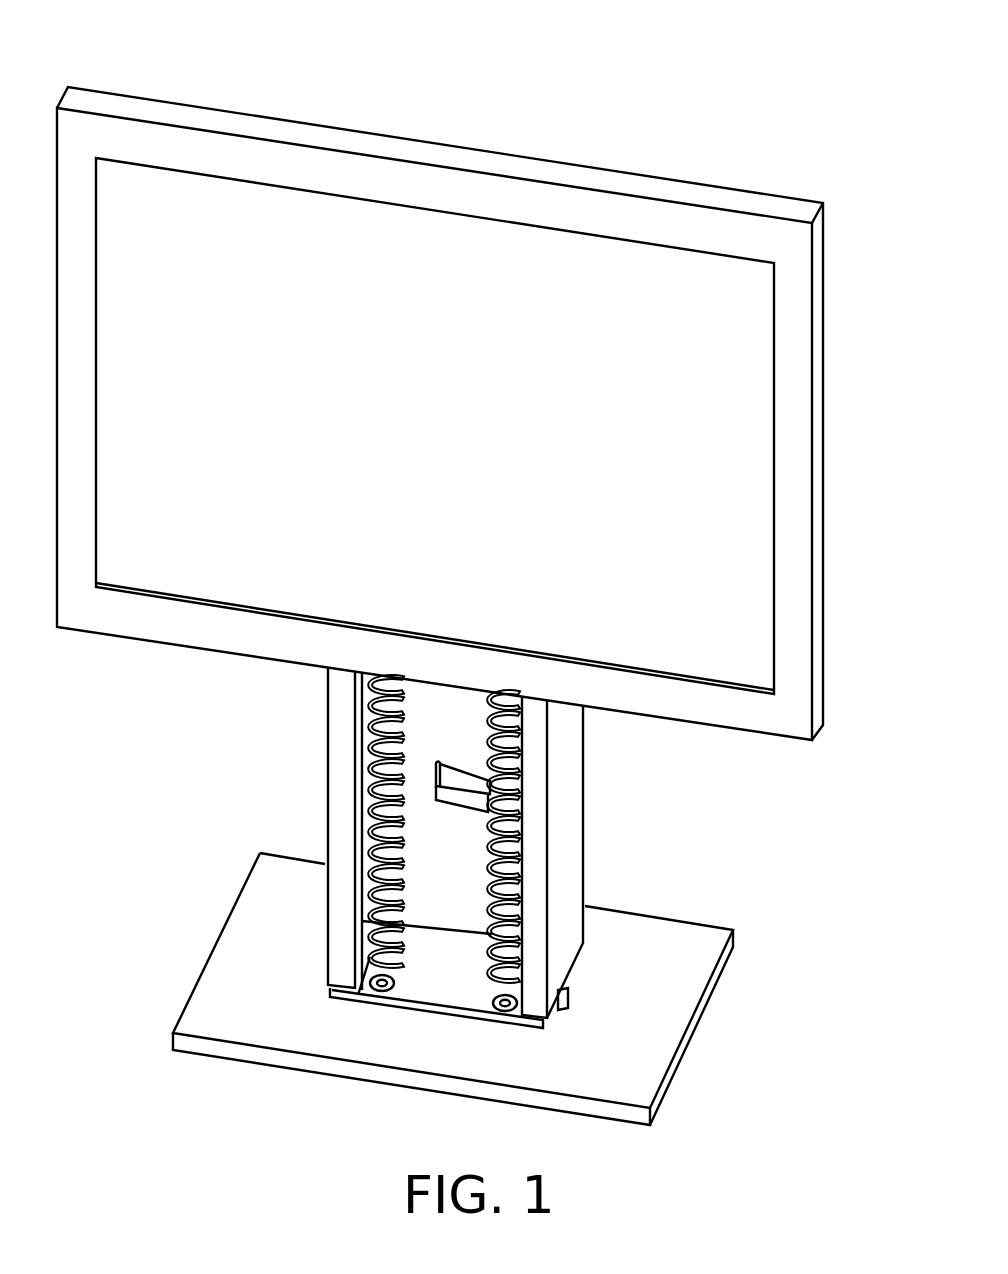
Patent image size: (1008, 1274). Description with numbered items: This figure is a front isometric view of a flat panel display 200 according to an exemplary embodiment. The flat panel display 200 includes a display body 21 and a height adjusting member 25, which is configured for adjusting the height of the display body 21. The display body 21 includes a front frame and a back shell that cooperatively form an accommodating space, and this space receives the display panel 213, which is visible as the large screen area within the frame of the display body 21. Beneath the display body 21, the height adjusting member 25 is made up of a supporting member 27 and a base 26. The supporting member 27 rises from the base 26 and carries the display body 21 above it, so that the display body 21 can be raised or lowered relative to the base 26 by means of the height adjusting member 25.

The flat panel display 200 is at (478, 43).
The display body 21 is at (497, 160).
The display panel 213 is at (727, 448).
The height adjusting member 25 is at (803, 752).
The supporting member 27 is at (565, 806).
The base 26 is at (668, 940).